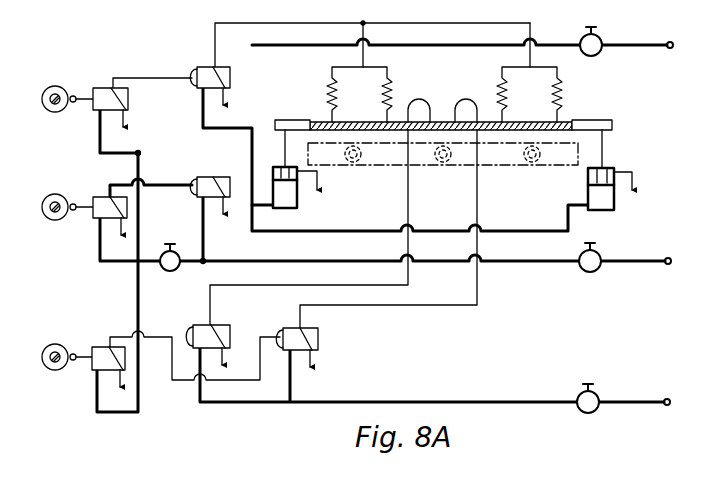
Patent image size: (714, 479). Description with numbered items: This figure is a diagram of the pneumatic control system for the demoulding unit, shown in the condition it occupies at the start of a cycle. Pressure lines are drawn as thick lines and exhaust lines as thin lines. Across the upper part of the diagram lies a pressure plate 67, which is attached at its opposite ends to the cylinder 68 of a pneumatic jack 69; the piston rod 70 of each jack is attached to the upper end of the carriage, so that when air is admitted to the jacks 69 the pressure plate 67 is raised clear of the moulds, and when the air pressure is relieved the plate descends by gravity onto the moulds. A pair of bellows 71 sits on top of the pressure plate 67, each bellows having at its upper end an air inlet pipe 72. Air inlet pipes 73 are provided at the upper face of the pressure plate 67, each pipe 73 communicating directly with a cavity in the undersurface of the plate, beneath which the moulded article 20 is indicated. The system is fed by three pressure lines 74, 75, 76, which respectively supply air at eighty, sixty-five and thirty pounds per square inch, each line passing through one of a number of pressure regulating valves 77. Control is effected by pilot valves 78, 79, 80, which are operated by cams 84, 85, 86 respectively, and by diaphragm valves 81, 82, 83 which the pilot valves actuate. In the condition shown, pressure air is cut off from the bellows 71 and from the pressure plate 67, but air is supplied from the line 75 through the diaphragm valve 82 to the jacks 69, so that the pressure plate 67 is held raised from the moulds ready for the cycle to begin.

The workpiece 20 is at (463, 160).
The pressure plate 67 is at (568, 123).
The cylinder 68 is at (288, 208).
The pneumatic jack 69 is at (300, 197).
The piston rod 70 is at (283, 145).
The bellows 71 is at (385, 82).
The air inlet pipe 72 is at (533, 36).
The air inlet pipe 73 is at (436, 112).
The pressure line 74 is at (652, 44).
The pressure line 75 is at (645, 259).
The pressure line 76 is at (640, 400).
The pressure regulating valve 77 is at (597, 40).
The pilot valve 78 is at (129, 93).
The pilot valve 79 is at (94, 218).
The pilot valve 80 is at (92, 369).
The diaphragm valve 81 is at (199, 68).
The diaphragm valve 82 is at (196, 177).
The diaphragm valve 83 is at (281, 329).
The cam 84 is at (66, 88).
The cam 85 is at (65, 196).
The cam 86 is at (64, 346).